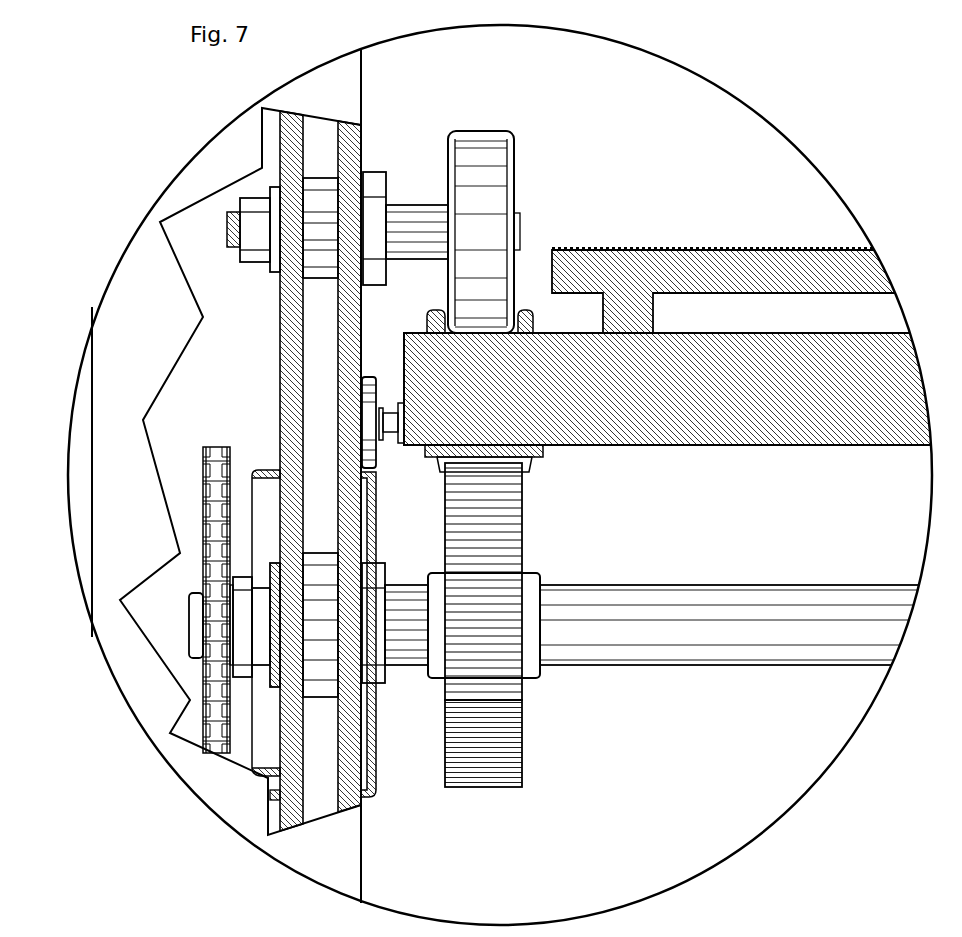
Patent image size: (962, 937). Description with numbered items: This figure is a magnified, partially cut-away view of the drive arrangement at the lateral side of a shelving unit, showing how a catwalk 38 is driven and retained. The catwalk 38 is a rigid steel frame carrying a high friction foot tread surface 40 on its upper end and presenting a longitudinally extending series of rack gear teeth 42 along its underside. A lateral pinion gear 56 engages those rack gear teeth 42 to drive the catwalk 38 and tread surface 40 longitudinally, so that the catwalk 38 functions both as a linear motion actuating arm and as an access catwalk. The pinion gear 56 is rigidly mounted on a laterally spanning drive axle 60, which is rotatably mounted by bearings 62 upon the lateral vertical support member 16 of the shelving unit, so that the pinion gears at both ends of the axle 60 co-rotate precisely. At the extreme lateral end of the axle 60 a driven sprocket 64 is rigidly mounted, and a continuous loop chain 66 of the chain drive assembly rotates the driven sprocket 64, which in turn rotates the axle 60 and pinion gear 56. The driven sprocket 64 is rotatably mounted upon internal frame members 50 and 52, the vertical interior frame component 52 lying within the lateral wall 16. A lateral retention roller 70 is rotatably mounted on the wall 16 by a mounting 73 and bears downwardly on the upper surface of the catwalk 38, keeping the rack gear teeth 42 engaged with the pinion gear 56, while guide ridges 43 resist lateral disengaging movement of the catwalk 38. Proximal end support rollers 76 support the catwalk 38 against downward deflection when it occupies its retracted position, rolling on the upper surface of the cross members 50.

The lateral vertical support member 16 is at (90, 378).
The catwalk 38 is at (697, 408).
The foot tread surface 40 is at (622, 250).
The rack gear teeth 42 is at (528, 465).
The guide ridges 43 is at (427, 312).
The internal frame members 50 is at (270, 467).
The vertical interior frame component 52 is at (293, 150).
The lateral pinion gear 56 is at (492, 758).
The drive axle 60 is at (690, 640).
The bearings 62 is at (340, 718).
The driven sprocket 64 is at (215, 548).
The continuous loop chain 66 is at (200, 733).
The lateral retention roller 70 is at (483, 145).
The bearing 73 is at (316, 178).
The proximal end support rollers 76 is at (380, 394).